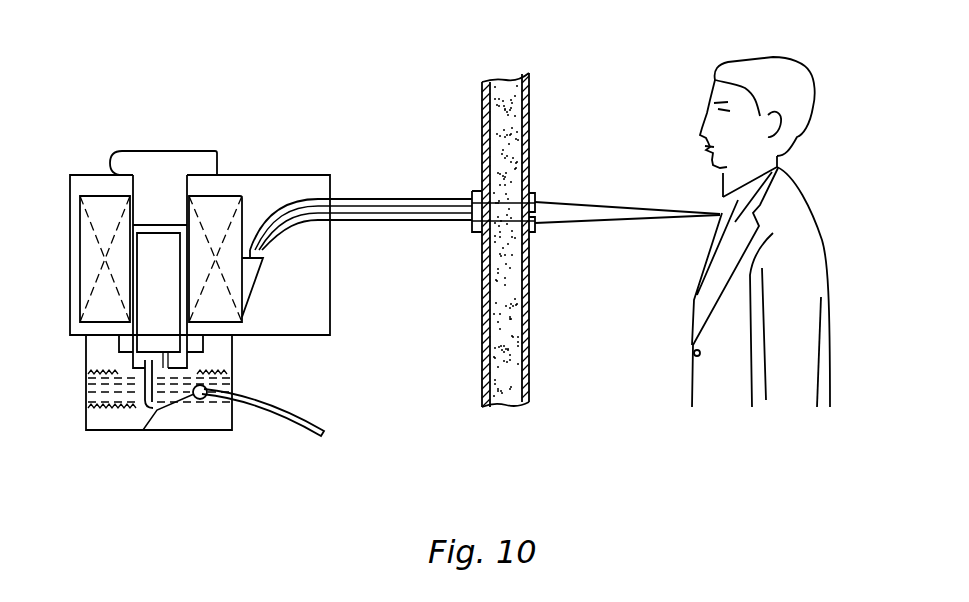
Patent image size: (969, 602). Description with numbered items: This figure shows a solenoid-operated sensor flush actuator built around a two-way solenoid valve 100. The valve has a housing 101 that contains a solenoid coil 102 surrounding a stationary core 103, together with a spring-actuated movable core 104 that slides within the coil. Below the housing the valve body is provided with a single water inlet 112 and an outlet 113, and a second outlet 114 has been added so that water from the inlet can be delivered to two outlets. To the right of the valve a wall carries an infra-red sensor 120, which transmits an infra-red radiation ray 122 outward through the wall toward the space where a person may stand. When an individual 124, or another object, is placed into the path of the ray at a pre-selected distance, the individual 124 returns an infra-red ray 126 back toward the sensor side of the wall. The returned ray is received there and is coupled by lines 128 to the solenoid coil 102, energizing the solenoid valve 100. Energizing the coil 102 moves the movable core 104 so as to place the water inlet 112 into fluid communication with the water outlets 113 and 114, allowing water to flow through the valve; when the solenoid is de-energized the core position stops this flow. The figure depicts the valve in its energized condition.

The two-way solenoid valve 100 is at (90, 148).
The housing 101 is at (262, 188).
The solenoid coil 102 is at (235, 236).
The stationary core 103 is at (170, 197).
The movable core 104 is at (150, 243).
The inlet 112 is at (93, 393).
The outlet 113 is at (203, 386).
The outlet 114 is at (277, 415).
The infra-red sensor 120 is at (542, 180).
The infra-red radiation ray 122 is at (593, 203).
The individual 124 is at (692, 373).
The infra-red ray 126 is at (573, 225).
The lines 128 is at (417, 227).